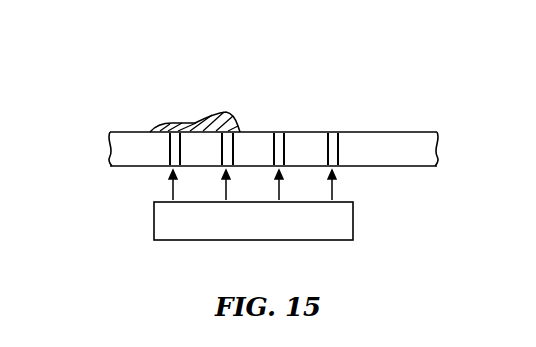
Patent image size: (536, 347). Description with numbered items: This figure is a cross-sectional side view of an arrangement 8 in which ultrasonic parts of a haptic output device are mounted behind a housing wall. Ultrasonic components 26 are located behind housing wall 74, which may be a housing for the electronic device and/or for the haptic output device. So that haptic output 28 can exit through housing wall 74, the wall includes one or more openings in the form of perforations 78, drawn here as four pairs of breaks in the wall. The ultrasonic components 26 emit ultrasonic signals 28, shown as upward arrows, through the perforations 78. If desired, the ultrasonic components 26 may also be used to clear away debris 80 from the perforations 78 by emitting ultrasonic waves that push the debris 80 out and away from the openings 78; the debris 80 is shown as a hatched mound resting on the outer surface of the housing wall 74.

The system / assembly 8 is at (352, 70).
The ultrasonic components 26 is at (353, 220).
The haptic output 28 is at (336, 189).
The housing wall 74 is at (391, 140).
The perforations 78 is at (330, 145).
The debris 80 is at (224, 112).